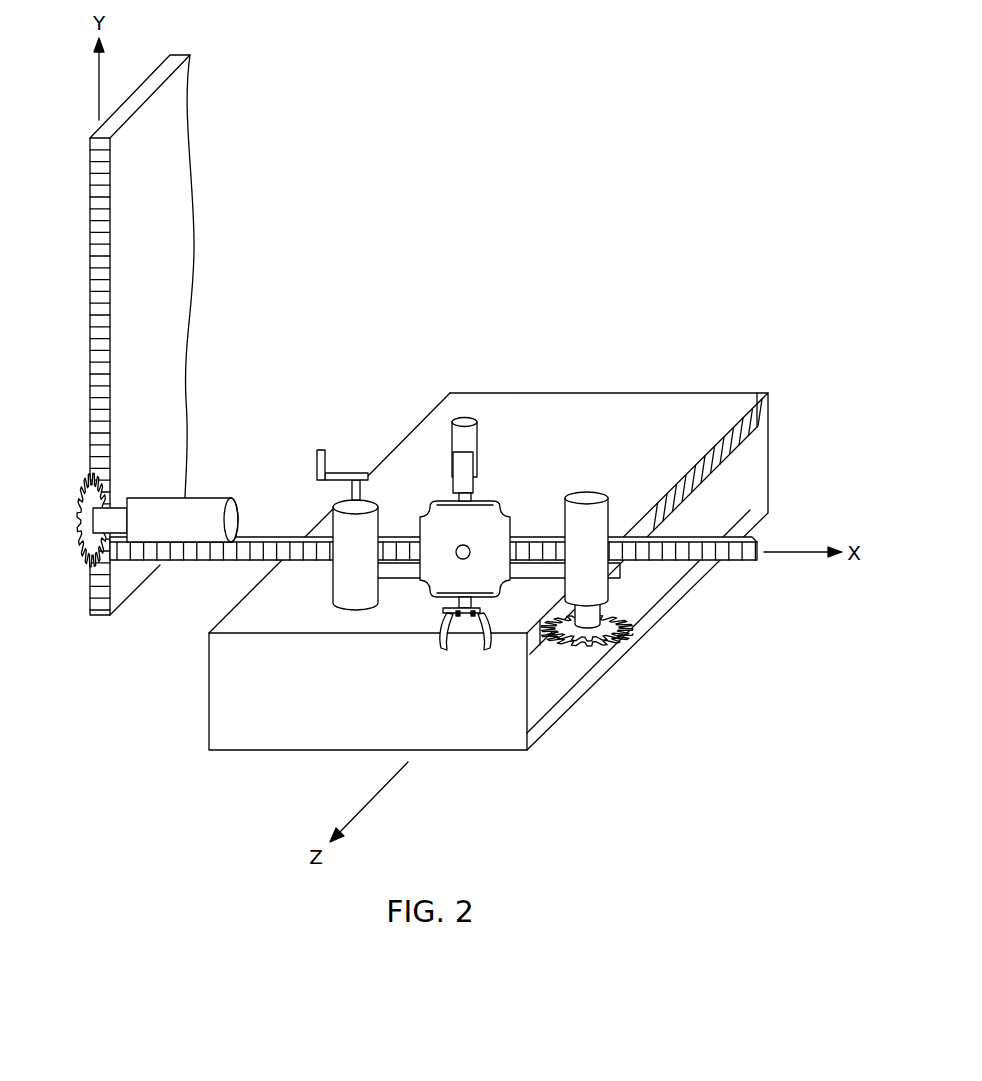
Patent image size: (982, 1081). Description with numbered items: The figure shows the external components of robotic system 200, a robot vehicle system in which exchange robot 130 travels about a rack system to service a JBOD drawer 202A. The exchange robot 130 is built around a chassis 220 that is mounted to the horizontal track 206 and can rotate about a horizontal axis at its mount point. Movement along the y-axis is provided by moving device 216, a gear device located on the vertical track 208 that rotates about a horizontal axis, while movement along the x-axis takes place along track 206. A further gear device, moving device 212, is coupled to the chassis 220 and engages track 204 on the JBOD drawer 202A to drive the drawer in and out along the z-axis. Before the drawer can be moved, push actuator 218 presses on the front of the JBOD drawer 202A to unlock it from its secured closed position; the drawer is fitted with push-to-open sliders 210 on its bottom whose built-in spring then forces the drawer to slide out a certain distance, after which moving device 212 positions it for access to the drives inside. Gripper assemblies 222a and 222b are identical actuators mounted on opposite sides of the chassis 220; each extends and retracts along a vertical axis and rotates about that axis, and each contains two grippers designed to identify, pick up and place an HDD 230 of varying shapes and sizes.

The exchange robot 130 is at (422, 500).
The robotic system 200 is at (693, 143).
The JBOD drawer 202A is at (311, 750).
The track 204 is at (768, 415).
The track 206 is at (297, 538).
The track 208 is at (88, 317).
The push-to-open sliders 210 is at (768, 513).
The moving device 212 is at (588, 498).
The moving device 216 is at (80, 520).
The push actuator 218 is at (321, 450).
The chassis 220 is at (423, 590).
The gripper assembly 222a is at (470, 482).
The gripper assembly 222b is at (468, 647).
The HDD 230 is at (465, 418).